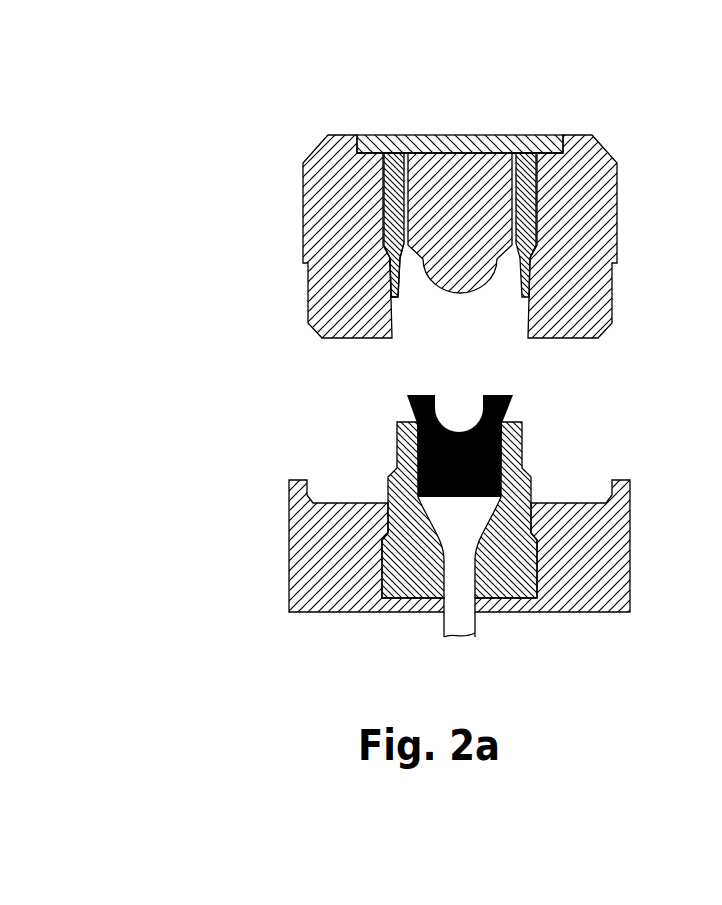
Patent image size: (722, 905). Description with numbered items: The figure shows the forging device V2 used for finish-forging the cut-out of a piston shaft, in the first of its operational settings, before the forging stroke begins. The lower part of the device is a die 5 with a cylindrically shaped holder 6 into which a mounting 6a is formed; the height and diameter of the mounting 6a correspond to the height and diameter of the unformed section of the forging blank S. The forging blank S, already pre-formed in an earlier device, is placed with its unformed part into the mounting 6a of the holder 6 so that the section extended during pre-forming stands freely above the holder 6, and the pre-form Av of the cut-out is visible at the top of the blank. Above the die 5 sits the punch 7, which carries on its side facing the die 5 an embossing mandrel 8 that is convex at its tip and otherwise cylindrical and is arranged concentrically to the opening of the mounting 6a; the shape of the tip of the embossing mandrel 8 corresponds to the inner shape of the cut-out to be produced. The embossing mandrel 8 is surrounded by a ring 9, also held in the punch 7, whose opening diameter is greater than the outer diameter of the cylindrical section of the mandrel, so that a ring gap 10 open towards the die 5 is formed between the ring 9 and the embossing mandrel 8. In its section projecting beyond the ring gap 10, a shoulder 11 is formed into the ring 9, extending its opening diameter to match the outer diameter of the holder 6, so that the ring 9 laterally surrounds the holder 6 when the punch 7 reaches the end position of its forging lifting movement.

The forging device V2 is at (290, 108).
The die 5 is at (376, 463).
The holder 6 is at (519, 528).
The mounting 6a is at (416, 422).
The punch 7 is at (493, 135).
The embossing mandrel 8 is at (455, 258).
The ring 9 is at (385, 213).
The ring gap 10 is at (404, 193).
The shoulder 11 is at (390, 273).
The forging blank S is at (460, 446).
The pre-form of the cut-out Av is at (463, 412).